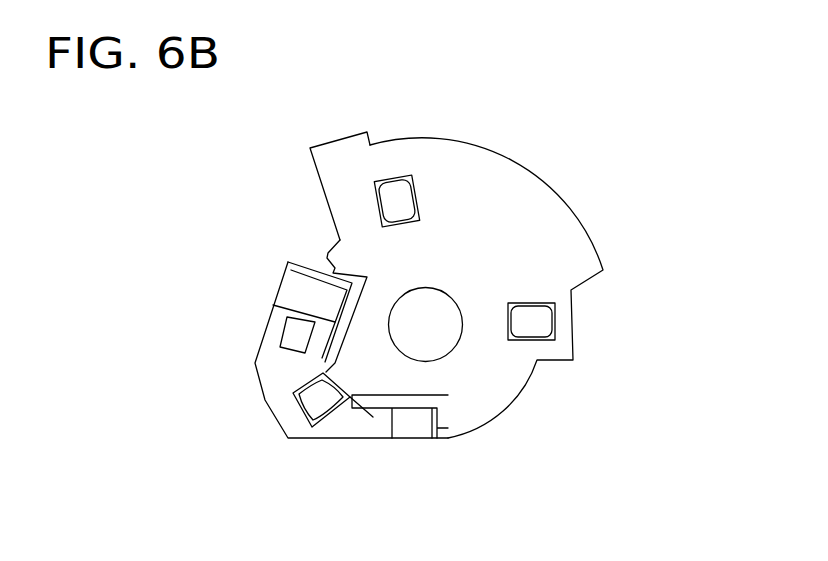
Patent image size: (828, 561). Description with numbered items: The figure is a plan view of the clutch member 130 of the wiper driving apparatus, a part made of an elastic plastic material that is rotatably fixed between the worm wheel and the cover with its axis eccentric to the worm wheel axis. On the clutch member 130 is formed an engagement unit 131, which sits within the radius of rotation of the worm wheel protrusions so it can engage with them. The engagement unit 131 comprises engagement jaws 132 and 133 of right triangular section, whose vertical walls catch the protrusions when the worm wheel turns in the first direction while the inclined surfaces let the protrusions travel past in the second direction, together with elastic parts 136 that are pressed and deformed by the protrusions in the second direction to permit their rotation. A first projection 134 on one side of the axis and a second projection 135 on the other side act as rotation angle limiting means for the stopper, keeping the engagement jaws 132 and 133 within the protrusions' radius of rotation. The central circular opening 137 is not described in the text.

The clutch member 130 is at (587, 192).
The engagement unit 131 is at (174, 257).
The engagement jaw 132 is at (306, 290).
The engagement jaw 133 is at (418, 425).
The first projection 134 is at (280, 423).
The second projection 135 is at (323, 190).
The elastic part 136 is at (315, 379).
The central hole 137 is at (440, 318).